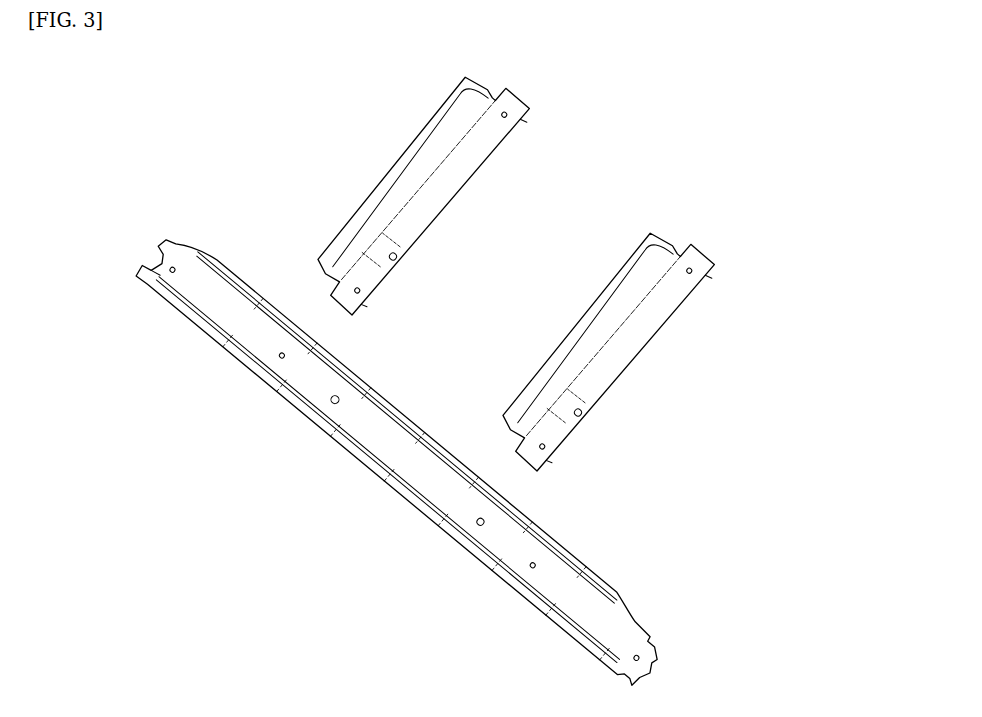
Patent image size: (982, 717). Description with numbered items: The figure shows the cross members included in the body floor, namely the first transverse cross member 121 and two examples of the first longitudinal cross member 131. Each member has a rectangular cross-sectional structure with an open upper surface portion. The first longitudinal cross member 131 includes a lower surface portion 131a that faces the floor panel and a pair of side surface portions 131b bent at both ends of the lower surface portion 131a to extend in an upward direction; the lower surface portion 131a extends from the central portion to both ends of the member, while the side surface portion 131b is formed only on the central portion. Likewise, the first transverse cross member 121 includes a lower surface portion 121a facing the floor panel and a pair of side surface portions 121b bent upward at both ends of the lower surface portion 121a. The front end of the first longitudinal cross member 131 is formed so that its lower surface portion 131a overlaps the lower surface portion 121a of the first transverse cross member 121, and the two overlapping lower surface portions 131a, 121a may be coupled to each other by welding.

The first transverse cross member 121 is at (189, 225).
The lower surface portion 121a is at (415, 470).
The side surface portion 121b is at (410, 435).
The first longitudinal cross member 131 is at (541, 94).
The lower surface portion 131a is at (433, 203).
The side surface portion 131b is at (410, 178).